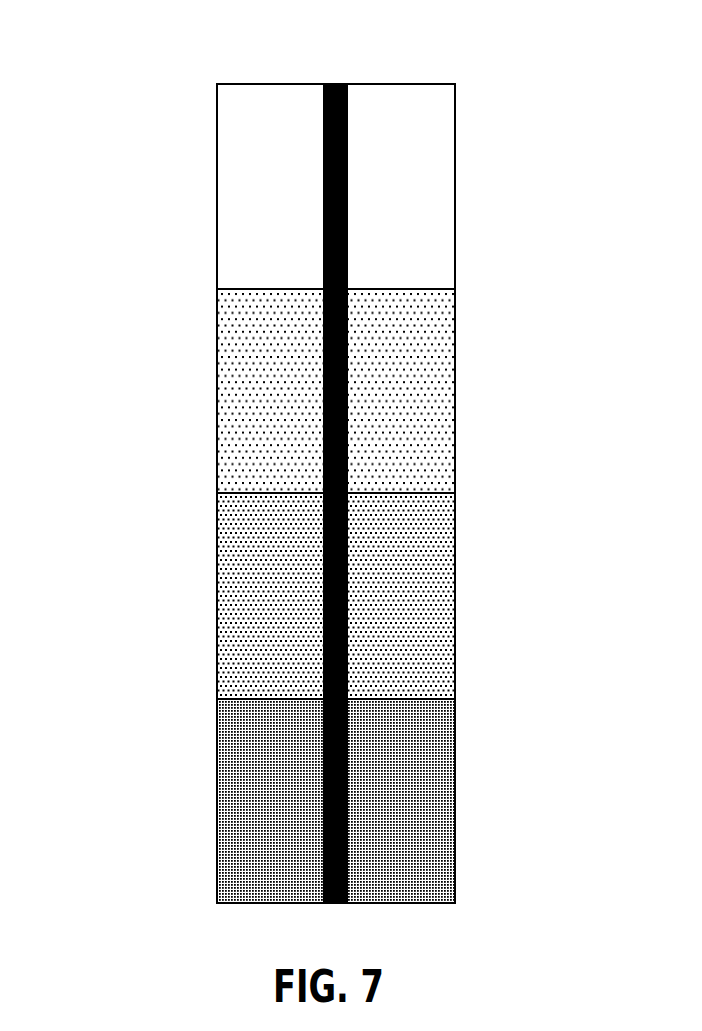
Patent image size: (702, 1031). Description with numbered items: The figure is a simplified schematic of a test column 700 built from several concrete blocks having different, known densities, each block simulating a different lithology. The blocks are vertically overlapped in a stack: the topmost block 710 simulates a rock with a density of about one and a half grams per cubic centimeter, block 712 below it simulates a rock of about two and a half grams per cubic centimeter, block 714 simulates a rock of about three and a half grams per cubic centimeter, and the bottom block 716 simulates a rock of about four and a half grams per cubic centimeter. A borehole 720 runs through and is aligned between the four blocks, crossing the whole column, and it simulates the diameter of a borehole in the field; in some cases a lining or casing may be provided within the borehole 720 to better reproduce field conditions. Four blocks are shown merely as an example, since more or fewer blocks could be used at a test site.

The test column 700 is at (150, 210).
The block 710 is at (428, 195).
The block 712 is at (430, 370).
The block 714 is at (429, 595).
The block 716 is at (429, 783).
The borehole 720 is at (340, 83).